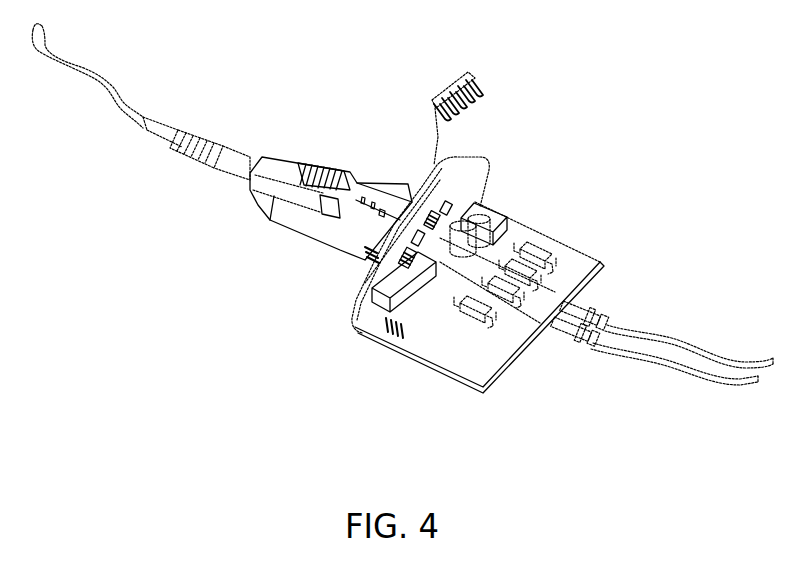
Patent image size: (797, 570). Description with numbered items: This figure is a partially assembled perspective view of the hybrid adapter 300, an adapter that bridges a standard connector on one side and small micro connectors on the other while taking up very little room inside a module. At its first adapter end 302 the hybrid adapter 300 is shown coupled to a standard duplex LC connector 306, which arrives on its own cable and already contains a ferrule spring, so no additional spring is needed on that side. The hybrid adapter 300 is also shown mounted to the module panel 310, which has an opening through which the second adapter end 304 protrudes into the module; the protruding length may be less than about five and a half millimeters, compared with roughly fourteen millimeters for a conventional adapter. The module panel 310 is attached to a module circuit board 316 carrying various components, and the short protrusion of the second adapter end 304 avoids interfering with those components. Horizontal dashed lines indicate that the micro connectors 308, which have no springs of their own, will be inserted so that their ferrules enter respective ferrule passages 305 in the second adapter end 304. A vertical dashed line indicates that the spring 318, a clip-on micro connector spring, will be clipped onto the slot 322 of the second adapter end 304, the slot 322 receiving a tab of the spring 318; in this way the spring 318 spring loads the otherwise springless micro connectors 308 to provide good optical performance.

The hybrid adapter 300 is at (390, 210).
The first adapter end 302 is at (335, 238).
The second adapter end 304 is at (445, 210).
The ferrule passages 305 is at (412, 255).
The duplex LC connector 306 is at (292, 175).
The micro connectors 308 is at (600, 318).
The module panel 310 is at (350, 302).
The module circuit board 316 is at (452, 347).
The spring 318 is at (458, 73).
The slot 322 is at (434, 216).